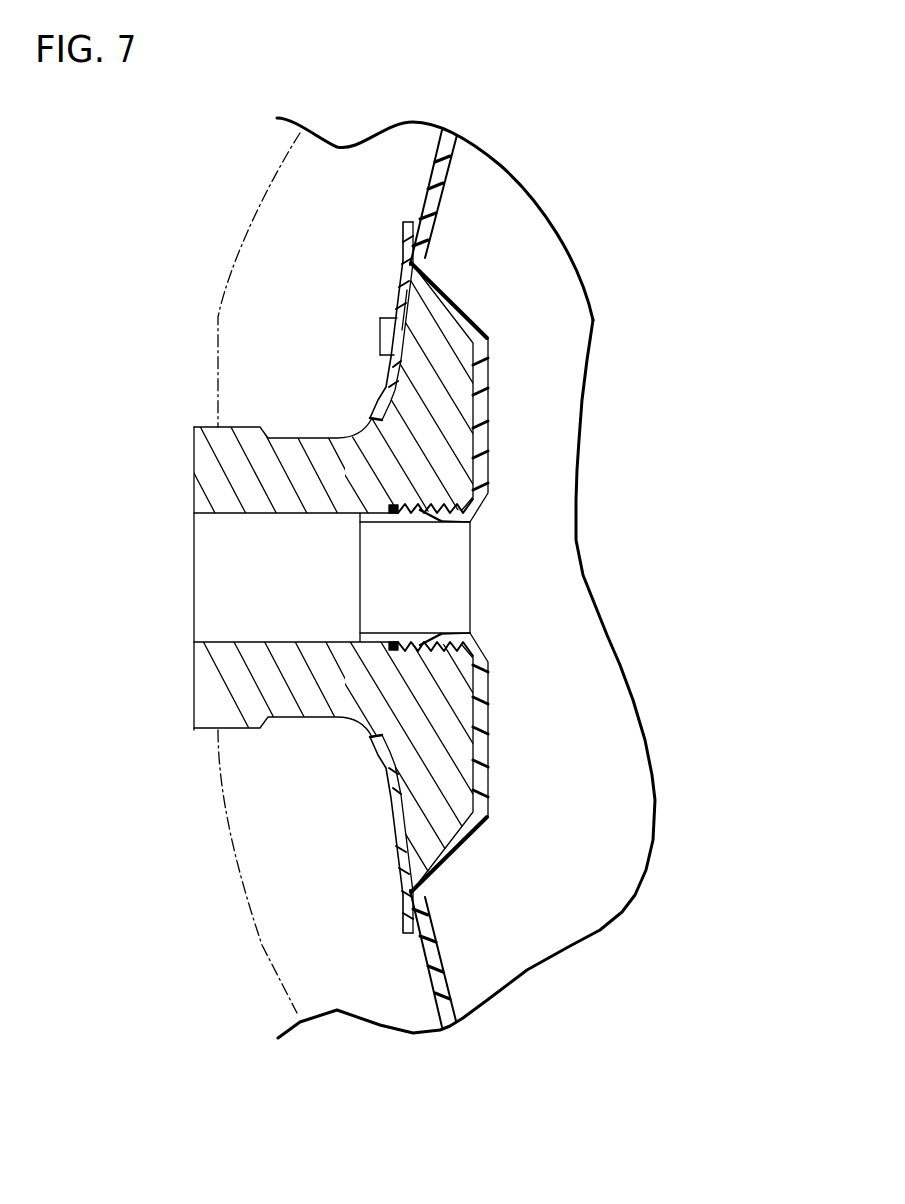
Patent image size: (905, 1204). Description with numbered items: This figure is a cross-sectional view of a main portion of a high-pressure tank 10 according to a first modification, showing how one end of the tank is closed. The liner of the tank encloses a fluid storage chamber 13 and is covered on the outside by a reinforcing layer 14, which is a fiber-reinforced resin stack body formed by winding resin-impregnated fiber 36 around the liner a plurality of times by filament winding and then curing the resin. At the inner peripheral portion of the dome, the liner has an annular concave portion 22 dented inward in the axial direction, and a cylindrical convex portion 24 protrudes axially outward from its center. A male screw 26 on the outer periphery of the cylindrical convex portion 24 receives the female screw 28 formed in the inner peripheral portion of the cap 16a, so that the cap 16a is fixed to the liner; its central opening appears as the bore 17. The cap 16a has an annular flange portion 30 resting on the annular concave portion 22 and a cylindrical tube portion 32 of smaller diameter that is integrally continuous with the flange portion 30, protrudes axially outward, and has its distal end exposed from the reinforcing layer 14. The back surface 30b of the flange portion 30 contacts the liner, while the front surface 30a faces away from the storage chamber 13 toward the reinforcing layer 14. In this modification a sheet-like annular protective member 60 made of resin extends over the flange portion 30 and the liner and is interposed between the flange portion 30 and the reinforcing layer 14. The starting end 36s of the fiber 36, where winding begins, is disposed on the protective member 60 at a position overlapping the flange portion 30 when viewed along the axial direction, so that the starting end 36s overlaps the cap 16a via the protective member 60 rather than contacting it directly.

The high-pressure tank 10 is at (125, 137).
The fluid storage chamber 13 is at (463, 938).
The reinforcing layer 14 is at (263, 196).
The cap 16a is at (193, 454).
The bore 17 is at (215, 560).
The annular concave portion 22 is at (489, 755).
The cylindrical convex portion 24 is at (387, 633).
The male screw 26 is at (445, 652).
The female screw 28 is at (460, 512).
The flange portion 30 is at (457, 382).
The front surface 30a is at (398, 293).
The back surface 30b is at (473, 443).
The cylindrical tube portion 32 is at (310, 450).
The fiber 36 is at (380, 331).
The starting end 36s is at (380, 345).
The protective member 60 is at (400, 310).